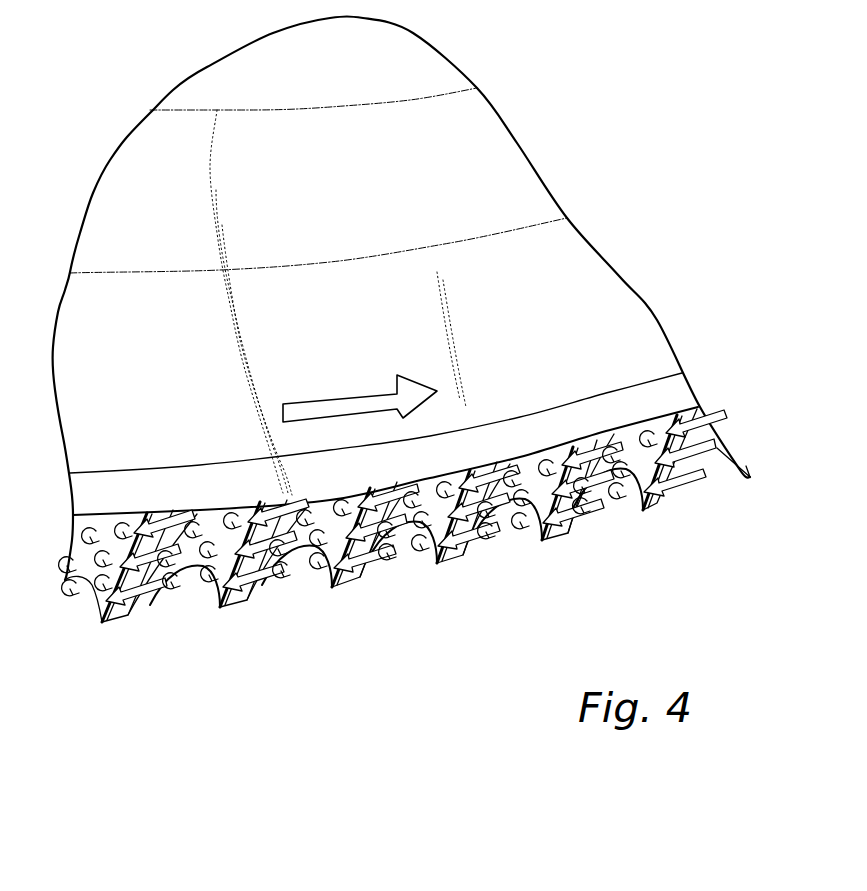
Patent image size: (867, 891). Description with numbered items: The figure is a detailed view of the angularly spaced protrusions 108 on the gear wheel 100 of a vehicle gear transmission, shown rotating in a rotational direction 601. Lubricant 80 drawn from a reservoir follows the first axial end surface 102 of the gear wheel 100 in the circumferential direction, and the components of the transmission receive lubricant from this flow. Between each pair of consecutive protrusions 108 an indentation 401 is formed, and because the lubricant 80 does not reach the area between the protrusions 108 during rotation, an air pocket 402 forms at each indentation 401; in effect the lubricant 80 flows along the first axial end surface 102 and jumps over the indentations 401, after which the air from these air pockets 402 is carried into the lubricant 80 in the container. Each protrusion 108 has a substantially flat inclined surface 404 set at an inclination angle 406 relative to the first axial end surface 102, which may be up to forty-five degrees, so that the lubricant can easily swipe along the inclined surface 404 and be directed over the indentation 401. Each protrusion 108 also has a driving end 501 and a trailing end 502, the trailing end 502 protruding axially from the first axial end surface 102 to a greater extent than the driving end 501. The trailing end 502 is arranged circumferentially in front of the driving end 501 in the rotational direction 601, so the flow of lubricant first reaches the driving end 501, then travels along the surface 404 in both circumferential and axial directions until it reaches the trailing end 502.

The gear wheel 100 is at (672, 158).
The rotational direction 601 is at (385, 397).
The indentation 401 is at (527, 458).
The air pocket 402 is at (525, 508).
The inclined surface 404 is at (257, 565).
The inclination angle 406 is at (147, 617).
The lubricant 80 is at (485, 540).
The angularly spaced protrusion 108 is at (355, 547).
The first axial end surface 102 is at (390, 537).
The driving end 501 is at (265, 570).
The trailing end 502 is at (210, 585).